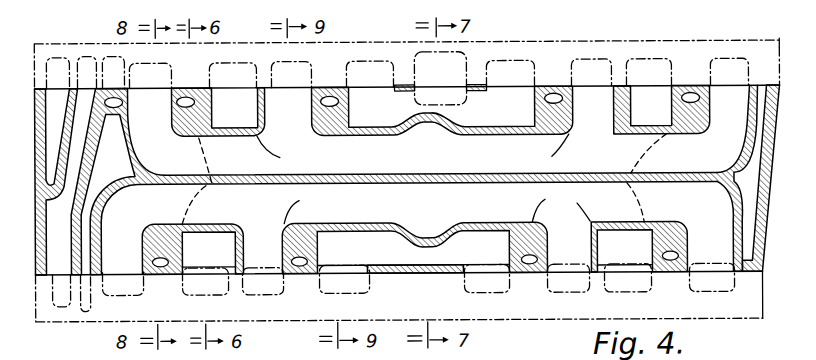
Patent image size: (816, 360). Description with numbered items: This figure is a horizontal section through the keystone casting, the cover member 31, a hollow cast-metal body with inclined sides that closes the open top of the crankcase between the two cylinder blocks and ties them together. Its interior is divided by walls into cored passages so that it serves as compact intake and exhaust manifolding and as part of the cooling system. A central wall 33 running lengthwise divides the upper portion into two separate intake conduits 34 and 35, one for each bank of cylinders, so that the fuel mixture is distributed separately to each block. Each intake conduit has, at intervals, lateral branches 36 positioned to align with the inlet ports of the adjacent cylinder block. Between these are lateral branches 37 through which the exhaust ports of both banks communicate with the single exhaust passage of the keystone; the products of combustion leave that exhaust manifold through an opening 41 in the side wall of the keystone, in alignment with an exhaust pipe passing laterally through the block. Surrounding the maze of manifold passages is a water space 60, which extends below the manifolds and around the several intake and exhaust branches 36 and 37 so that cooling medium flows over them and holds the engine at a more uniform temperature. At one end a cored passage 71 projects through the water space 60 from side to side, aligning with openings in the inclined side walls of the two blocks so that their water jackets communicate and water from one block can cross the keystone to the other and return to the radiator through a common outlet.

The cover member 31 is at (760, 224).
The central wall 33 is at (566, 175).
The intake conduit 34 is at (433, 159).
The intake conduit 35 is at (413, 203).
The lateral branch 36 is at (397, 182).
The lateral branch 37 is at (425, 176).
The opening 41 is at (440, 78).
The water space 60 is at (416, 180).
The cored passage 71 is at (57, 182).